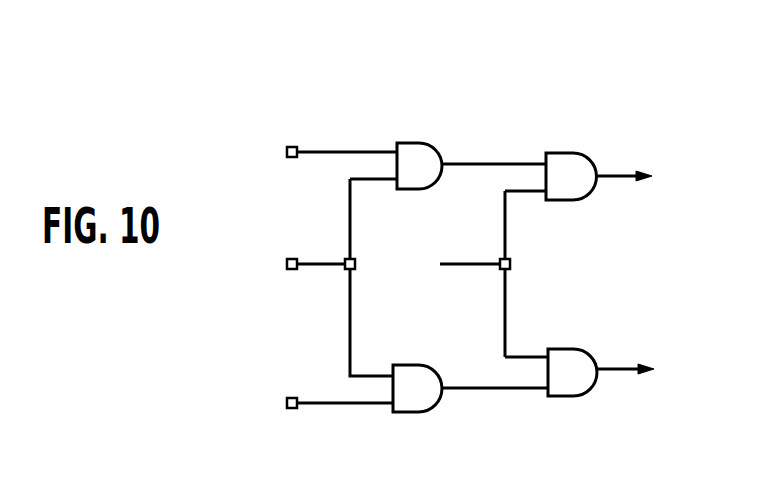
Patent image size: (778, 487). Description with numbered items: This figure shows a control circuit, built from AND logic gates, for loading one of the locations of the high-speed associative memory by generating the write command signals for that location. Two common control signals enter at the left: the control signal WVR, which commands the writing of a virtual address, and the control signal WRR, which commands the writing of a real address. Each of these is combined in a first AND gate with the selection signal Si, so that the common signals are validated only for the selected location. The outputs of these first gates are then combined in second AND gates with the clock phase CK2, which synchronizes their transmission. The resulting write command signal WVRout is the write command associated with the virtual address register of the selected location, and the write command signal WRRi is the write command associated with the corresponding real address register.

The control signal WVR is at (315, 153).
The selection signal Si is at (306, 266).
The control signal WRR is at (310, 404).
The clock phase CK2 is at (464, 264).
The write command signal WVRi WVRout is at (613, 176).
The write command signal WRRi is at (615, 369).